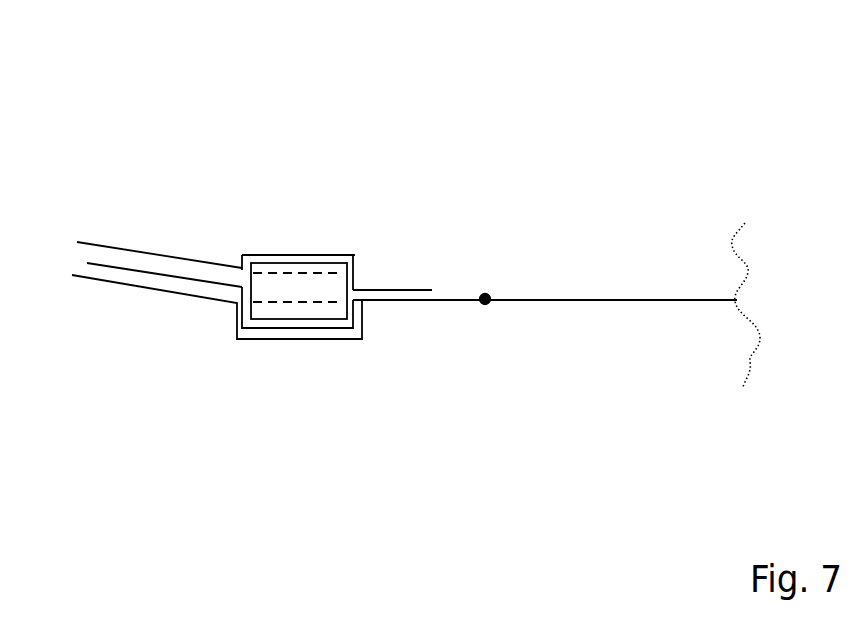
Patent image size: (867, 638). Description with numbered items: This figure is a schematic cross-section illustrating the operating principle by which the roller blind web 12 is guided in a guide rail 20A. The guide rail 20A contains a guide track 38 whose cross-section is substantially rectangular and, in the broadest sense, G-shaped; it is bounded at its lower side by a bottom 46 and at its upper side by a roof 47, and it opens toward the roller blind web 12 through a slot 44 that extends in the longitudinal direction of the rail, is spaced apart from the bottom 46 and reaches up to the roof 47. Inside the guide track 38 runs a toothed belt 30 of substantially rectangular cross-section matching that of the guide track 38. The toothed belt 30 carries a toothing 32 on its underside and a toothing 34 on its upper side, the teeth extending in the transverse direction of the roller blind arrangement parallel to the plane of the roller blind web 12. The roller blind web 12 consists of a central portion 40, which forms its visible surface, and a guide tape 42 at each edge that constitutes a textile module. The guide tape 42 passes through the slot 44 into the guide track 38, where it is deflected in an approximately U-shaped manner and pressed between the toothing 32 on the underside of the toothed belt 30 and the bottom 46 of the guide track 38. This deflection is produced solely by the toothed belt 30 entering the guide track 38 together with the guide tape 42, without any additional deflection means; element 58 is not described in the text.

The roller blind web 12 is at (548, 293).
The guide rail 20A is at (314, 255).
The toothed belt 30 is at (300, 290).
The toothing 32 is at (268, 310).
The toothing 34 is at (261, 267).
The guide track 38 is at (240, 258).
The central portion 40 is at (663, 301).
The guide tape 42 is at (438, 300).
The slot 44 is at (362, 301).
The bottom 46 is at (303, 338).
The roof 47 is at (244, 256).
The inlet tube 58 is at (132, 255).